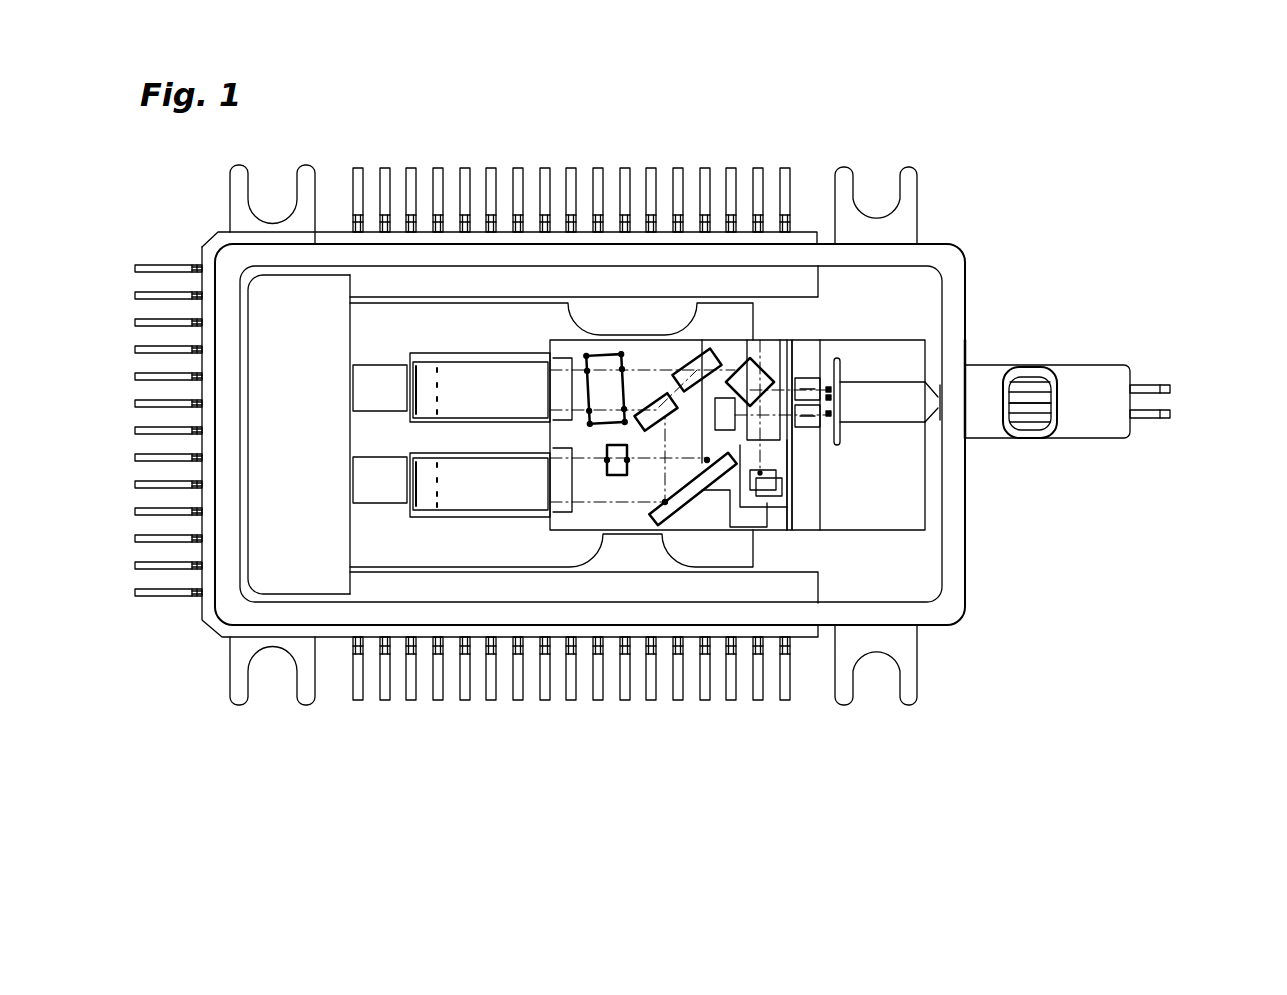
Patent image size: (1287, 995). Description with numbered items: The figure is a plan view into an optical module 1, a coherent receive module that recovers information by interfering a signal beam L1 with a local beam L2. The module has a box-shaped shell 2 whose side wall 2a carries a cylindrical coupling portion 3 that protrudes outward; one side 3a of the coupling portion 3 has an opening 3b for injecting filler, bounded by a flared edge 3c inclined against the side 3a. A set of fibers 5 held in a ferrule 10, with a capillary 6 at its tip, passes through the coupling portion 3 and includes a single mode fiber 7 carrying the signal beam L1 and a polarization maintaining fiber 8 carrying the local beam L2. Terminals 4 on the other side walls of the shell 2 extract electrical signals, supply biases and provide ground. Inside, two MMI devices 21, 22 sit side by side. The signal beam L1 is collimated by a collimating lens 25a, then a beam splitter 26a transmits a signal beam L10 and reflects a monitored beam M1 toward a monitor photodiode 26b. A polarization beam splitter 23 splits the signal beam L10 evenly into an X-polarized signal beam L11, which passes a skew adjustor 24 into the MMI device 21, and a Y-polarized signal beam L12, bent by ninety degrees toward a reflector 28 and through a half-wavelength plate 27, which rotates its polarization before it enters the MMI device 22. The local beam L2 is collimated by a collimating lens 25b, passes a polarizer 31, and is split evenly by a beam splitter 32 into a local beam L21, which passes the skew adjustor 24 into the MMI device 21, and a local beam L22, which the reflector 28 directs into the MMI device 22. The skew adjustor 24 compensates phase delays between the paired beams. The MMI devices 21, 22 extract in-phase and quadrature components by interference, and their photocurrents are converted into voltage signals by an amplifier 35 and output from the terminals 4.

The optical module 1 is at (1007, 150).
The shell 2 is at (967, 263).
The side wall 2a is at (972, 305).
The coupling portion 3 is at (1069, 362).
The side of coupling portion 3a is at (1102, 380).
The opening 3b is at (1030, 382).
The flared edge 3c is at (1030, 440).
The terminals 4 is at (805, 168).
The set of fibers 5 is at (1210, 358).
The capillary 6 is at (880, 395).
The single mode fiber 7 is at (1165, 390).
The polarization maintaining fiber 8 is at (1165, 425).
The ferrule 10 is at (1035, 408).
The MMI device 21 is at (478, 380).
The MMI device 22 is at (478, 488).
The polarization beam splitter 23 is at (690, 356).
The skew adjustor 24 is at (600, 352).
The collimating lens 25a is at (812, 378).
The collimating lens 25b is at (800, 430).
The beam splitter 26a is at (746, 360).
The monitor photodiode 26b is at (762, 478).
The half-wavelength plate 27 is at (615, 478).
The reflector 28 is at (690, 495).
The polarizer 31 is at (790, 488).
The beam splitter 32 is at (650, 395).
The amplifier 35 is at (382, 378).
The signal beam L1 is at (786, 376).
The local beam L2 is at (822, 450).
The signal beam L10 is at (700, 345).
The signal beam L11 is at (573, 345).
The signal beam L12 is at (730, 473).
The local beam L21 is at (610, 345).
The local beam L22 is at (617, 437).
The monitored beam M1 is at (780, 447).